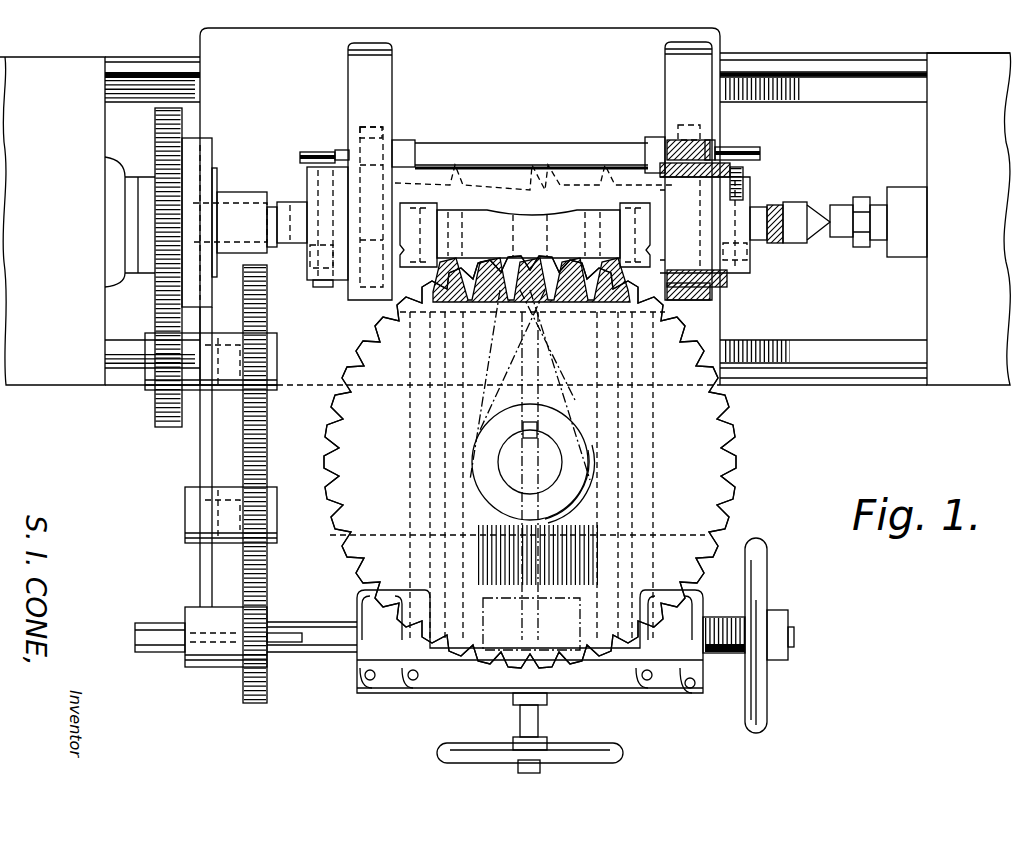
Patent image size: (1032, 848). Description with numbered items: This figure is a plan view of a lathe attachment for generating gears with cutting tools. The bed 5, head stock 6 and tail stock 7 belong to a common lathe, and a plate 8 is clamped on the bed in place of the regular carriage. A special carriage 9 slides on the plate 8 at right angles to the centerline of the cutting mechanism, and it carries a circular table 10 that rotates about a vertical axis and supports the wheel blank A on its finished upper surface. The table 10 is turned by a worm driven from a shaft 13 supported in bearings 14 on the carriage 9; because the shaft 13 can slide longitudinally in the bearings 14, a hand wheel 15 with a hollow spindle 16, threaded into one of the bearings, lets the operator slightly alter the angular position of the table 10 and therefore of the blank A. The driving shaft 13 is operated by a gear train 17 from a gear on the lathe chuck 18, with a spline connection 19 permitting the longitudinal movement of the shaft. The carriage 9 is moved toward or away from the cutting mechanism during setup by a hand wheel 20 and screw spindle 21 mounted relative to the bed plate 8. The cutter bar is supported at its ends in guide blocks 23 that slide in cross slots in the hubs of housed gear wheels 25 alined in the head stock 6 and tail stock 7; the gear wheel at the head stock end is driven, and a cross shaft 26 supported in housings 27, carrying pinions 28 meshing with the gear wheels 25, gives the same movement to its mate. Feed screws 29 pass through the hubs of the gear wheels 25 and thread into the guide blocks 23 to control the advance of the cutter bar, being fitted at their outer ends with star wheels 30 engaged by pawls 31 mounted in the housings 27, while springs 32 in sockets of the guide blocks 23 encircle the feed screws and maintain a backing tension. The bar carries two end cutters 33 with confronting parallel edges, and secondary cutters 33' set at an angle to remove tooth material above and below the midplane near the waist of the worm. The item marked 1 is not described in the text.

The slot of slide bracket 1 is at (560, 600).
The bed 5 is at (805, 55).
The head stock 6 is at (77, 221).
The tail stock 7 is at (880, 219).
The plate 8 is at (460, 206).
The special carriage 9 is at (475, 690).
The circular table 10 is at (733, 481).
The shaft 13 is at (300, 484).
The bearings 14 is at (357, 680).
The hand wheel 15 is at (767, 706).
The hollow spindle 16 is at (723, 660).
The gear train 17 is at (167, 280).
The lathe chuck 18 is at (192, 150).
The spline connection 19 is at (170, 655).
The hand wheel 20 is at (617, 745).
The screw spindle 21 is at (532, 385).
The guide blocks 23 is at (415, 207).
The gear wheels 25 is at (355, 217).
The cross shaft 26 is at (507, 148).
The housings 27 is at (398, 52).
The pinions 28 is at (395, 118).
The feed screws 29 is at (745, 190).
The star wheels 30 is at (310, 152).
The pawls 31 is at (340, 152).
The springs 32 is at (750, 256).
The end cutters 33 is at (535, 210).
The secondary cutters 33' is at (530, 301).
The wheel blank A is at (680, 442).